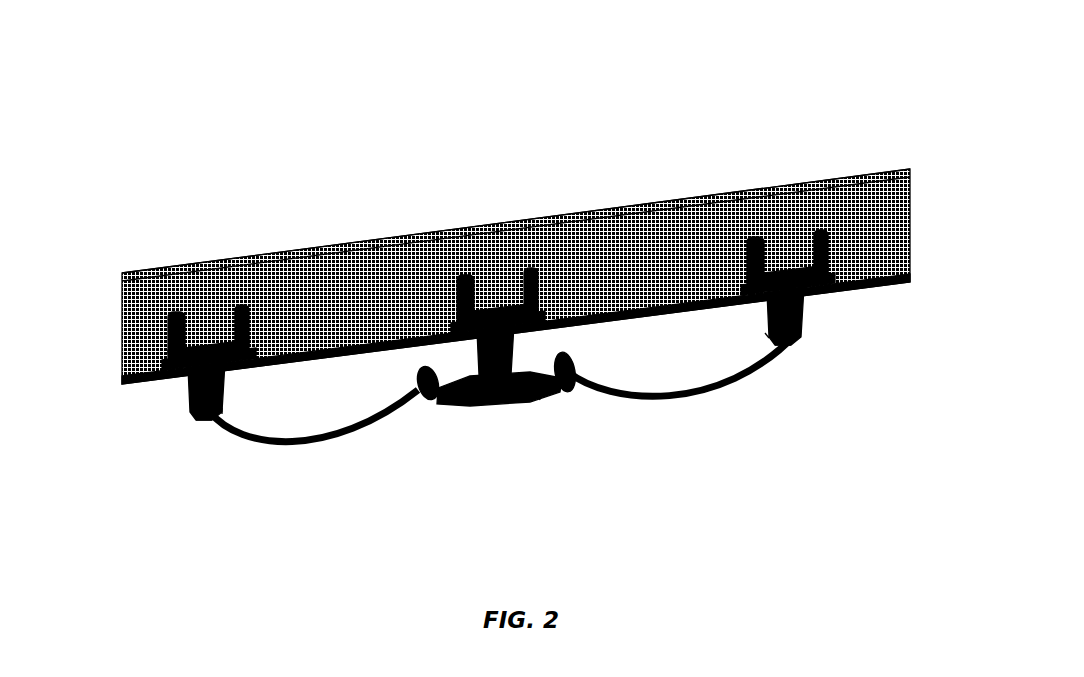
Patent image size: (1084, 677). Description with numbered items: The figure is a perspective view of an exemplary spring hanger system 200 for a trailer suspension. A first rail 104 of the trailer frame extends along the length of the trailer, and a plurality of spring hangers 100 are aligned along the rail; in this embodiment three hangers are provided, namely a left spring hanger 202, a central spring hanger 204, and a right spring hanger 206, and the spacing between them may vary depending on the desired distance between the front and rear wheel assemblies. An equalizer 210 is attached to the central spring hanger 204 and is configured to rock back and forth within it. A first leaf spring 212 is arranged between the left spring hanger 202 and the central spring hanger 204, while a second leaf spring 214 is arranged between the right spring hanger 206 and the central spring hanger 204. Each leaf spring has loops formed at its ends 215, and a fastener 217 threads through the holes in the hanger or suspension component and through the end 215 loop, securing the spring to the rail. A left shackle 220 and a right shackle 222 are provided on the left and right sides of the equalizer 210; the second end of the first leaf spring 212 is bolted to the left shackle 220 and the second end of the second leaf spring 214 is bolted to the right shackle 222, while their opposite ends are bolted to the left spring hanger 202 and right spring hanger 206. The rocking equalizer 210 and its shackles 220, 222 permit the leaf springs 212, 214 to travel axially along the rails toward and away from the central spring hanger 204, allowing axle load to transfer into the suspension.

The spring hanger 100 is at (853, 261).
The first rail 104 is at (307, 264).
The spring hanger system 200 is at (838, 118).
The left spring hanger 202 is at (212, 338).
The central spring hanger 204 is at (502, 303).
The right spring hanger 206 is at (765, 237).
The equalizer 210 is at (493, 403).
The first leaf spring 212 is at (322, 448).
The second leaf spring 214 is at (693, 401).
The end 215 is at (188, 410).
The fastener 217 is at (221, 408).
The left shackle 220 is at (430, 402).
The right shackle 222 is at (577, 393).